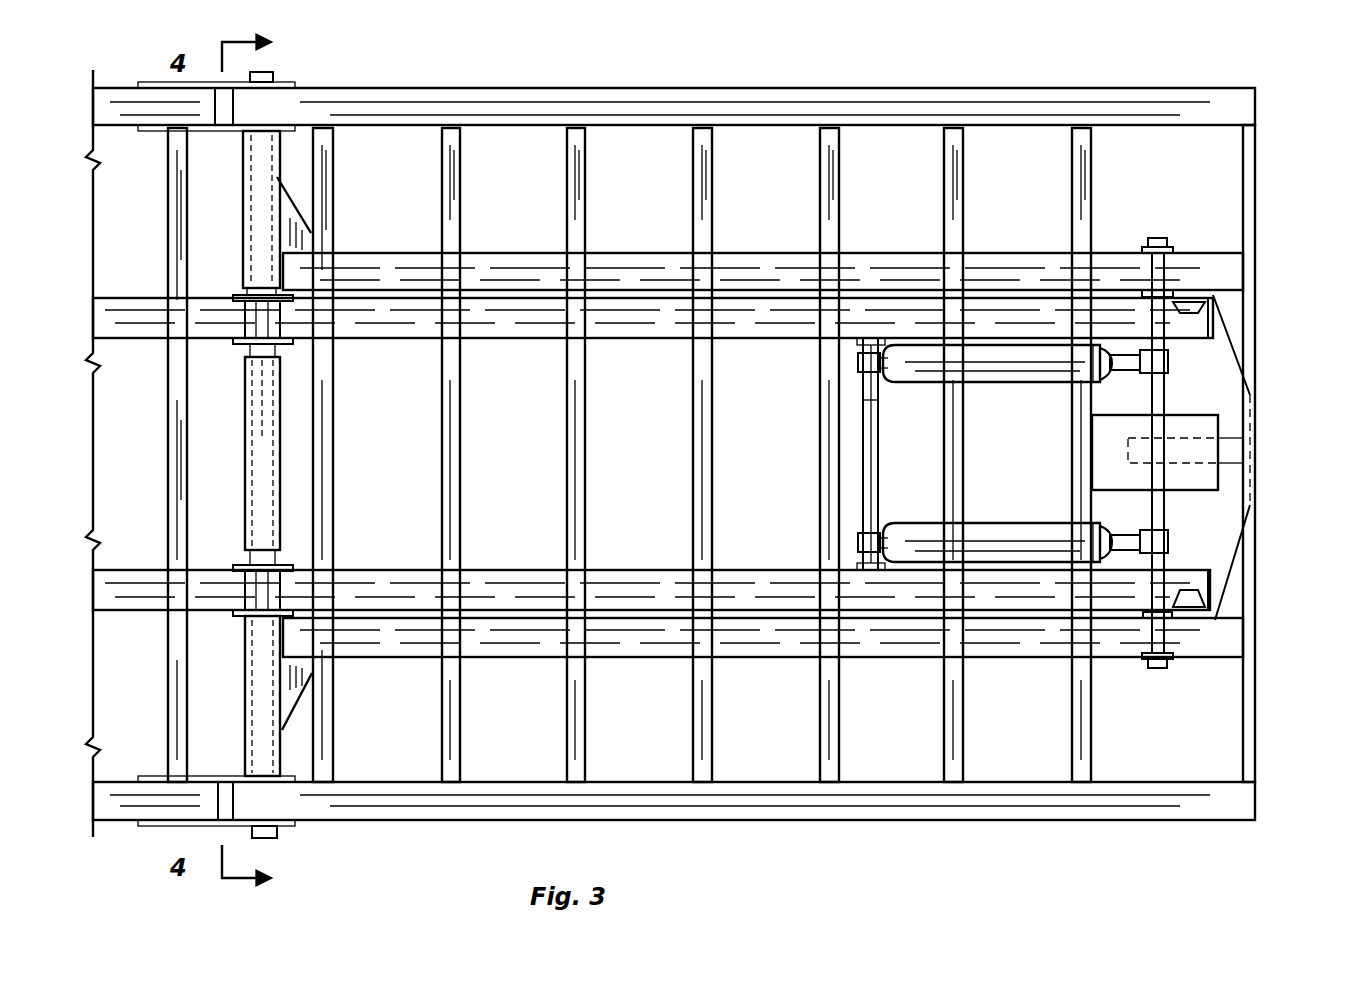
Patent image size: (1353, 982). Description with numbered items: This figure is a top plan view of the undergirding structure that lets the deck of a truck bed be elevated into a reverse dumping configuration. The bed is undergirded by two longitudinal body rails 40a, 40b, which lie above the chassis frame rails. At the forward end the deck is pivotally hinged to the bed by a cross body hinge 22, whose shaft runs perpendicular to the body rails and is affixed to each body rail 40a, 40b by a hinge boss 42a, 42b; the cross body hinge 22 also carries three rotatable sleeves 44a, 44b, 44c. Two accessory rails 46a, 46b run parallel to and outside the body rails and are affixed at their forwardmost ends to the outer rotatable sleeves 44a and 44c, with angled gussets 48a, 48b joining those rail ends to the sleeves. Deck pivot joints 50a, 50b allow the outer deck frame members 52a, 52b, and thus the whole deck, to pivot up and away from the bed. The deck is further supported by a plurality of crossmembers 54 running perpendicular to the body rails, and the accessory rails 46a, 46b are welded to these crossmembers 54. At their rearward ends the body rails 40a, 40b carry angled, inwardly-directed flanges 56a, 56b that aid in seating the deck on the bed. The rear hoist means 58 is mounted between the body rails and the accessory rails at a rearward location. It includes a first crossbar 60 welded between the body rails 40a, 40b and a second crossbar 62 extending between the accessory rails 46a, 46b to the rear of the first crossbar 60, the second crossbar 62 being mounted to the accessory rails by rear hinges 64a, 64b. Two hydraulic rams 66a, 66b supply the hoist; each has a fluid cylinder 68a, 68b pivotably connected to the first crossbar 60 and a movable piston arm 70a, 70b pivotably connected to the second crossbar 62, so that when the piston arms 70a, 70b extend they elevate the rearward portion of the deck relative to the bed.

The cross body hinge 22 is at (298, 72).
The outer deck frame member 52b is at (755, 90).
The outer deck frame member 52a is at (875, 805).
The crossmembers 54 is at (1078, 135).
The deck pivot joint 50b is at (262, 105).
The deck pivot joint 50a is at (265, 800).
The rotatable sleeve 44c is at (258, 232).
The rotatable sleeve 44b is at (245, 425).
The rotatable sleeve 44a is at (245, 672).
The hinge boss 42b is at (226, 295).
The hinge boss 42a is at (230, 562).
The angled gusset 48b is at (320, 205).
The angled gusset 48a is at (300, 683).
The accessory rail 46b is at (625, 268).
The accessory rail 46a is at (615, 635).
The longitudinal body rail 40b is at (640, 320).
The longitudinal body rail 40a is at (500, 582).
The rear hoist means 58 is at (852, 415).
The first crossbar 60 is at (868, 478).
The fluid cylinder 68b is at (925, 372).
The fluid cylinder 68a is at (922, 538).
The hydraulic ram 66b is at (1027, 360).
The hydraulic ram 66a is at (1008, 536).
The piston arm 70b is at (1130, 357).
The piston arm 70a is at (1128, 548).
The second crossbar 62 is at (1160, 400).
The rear hinge 64b is at (1150, 238).
The rear hinge 64a is at (1165, 668).
The angled inwardly-directed flange 56b is at (1205, 305).
The angled inwardly-directed flange 56a is at (1205, 612).